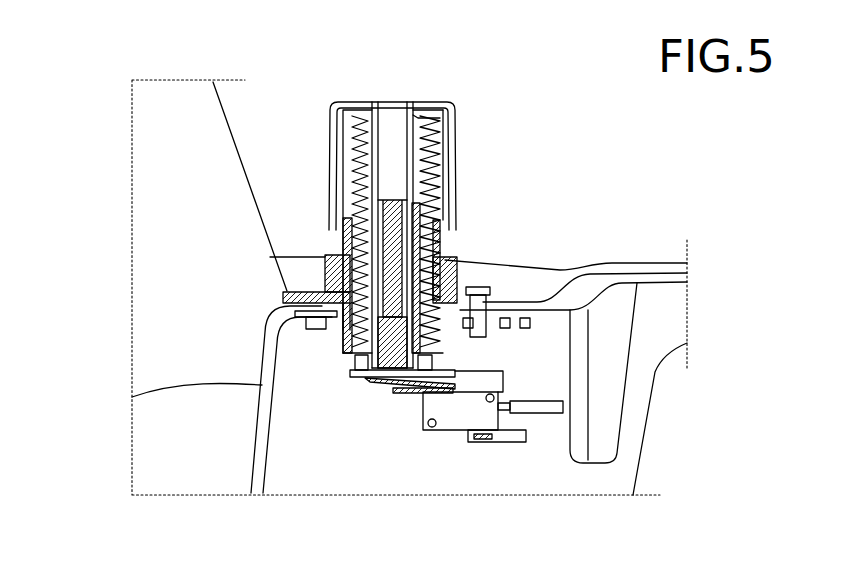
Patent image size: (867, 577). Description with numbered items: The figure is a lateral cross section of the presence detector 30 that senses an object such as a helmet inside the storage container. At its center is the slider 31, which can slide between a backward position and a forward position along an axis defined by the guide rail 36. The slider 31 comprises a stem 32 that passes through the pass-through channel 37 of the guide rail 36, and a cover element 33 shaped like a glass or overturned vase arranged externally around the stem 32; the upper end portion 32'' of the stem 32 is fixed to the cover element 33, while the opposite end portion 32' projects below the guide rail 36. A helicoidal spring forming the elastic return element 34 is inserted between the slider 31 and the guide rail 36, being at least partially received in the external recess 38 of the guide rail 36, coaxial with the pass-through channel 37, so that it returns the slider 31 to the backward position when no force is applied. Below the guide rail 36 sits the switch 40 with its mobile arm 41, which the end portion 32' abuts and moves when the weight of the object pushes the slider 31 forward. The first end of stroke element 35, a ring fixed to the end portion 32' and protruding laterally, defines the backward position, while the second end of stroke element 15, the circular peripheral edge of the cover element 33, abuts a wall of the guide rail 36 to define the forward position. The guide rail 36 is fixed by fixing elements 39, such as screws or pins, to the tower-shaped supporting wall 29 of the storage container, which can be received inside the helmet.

The second end of stroke element 15 is at (335, 228).
The supporting wall 29 is at (672, 270).
The presence detector 30 is at (395, 75).
The slider 31 is at (328, 96).
The stem 32 is at (386, 190).
The end portion 32' is at (534, 384).
The end portion 32'' is at (447, 83).
The cover element 33 is at (456, 137).
The elastic return element 34 is at (427, 185).
The first end of stroke element 35 is at (373, 380).
The guide rail 36 is at (345, 293).
The pass-through channel 37 is at (300, 312).
The external recess 38 is at (345, 250).
The fixing elements 39 is at (480, 327).
The switch 40 is at (453, 420).
The mobile arm 41 is at (410, 393).